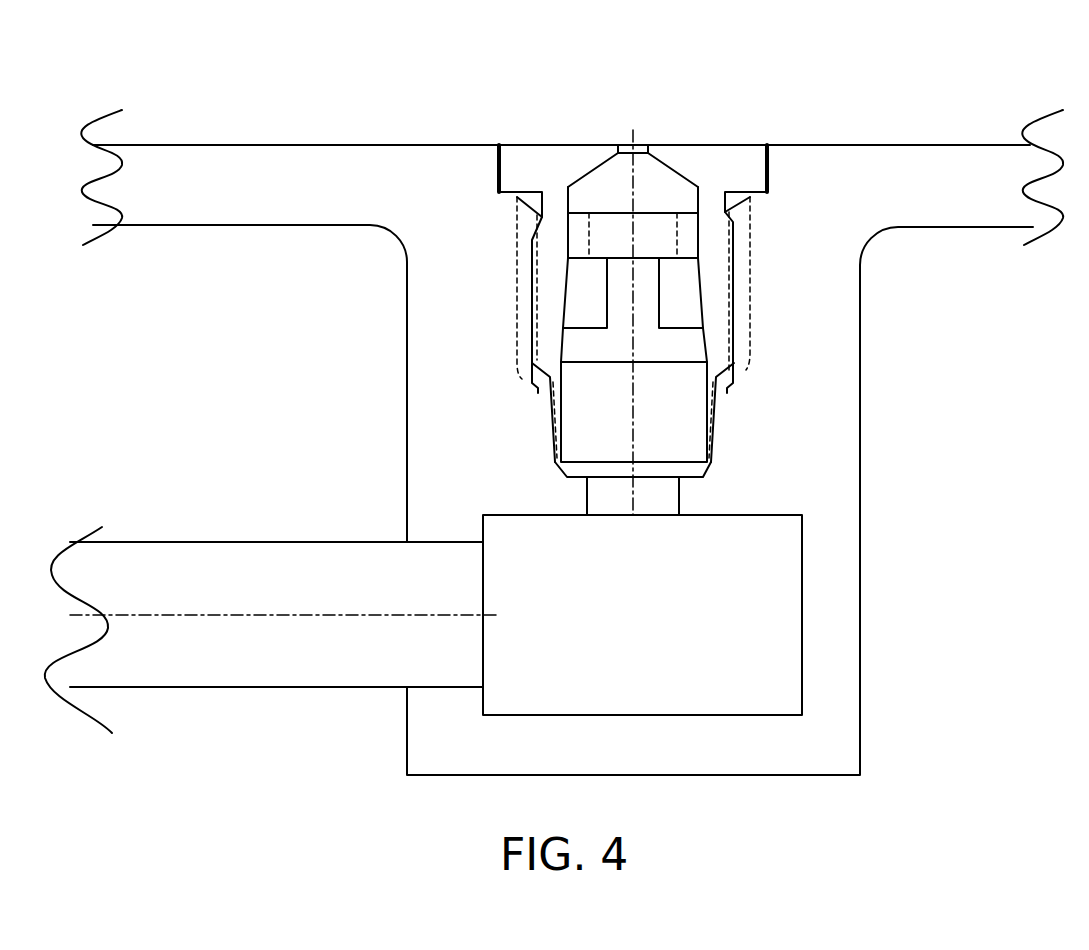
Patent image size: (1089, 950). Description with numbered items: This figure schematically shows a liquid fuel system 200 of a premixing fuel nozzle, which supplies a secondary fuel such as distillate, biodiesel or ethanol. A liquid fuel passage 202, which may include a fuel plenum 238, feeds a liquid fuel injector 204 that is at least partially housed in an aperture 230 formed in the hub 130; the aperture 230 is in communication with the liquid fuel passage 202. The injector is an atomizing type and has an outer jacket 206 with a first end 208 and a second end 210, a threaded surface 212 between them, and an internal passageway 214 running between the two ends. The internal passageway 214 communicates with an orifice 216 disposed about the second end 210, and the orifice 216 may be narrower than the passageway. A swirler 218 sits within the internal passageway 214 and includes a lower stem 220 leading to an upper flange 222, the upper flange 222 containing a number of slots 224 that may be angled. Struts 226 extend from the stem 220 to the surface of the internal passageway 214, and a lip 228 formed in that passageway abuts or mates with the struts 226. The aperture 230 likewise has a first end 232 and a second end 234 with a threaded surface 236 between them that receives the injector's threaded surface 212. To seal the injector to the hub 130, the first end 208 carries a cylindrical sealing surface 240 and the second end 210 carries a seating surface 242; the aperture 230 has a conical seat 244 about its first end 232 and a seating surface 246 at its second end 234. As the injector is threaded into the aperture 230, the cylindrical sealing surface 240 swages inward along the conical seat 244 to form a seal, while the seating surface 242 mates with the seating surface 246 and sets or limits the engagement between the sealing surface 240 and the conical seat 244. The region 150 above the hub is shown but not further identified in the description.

The hub 130 is at (889, 152).
The interior region 150 is at (545, 50).
The liquid fuel system 200 is at (858, 86).
The liquid fuel passage 202 is at (285, 614).
The liquid fuel injector 204 is at (670, 123).
The outer jacket 206 is at (682, 156).
The first end 208 is at (712, 403).
The second end 210 is at (533, 150).
The threaded surface 212 is at (735, 271).
The internal passageway 214 is at (634, 412).
The orifice 216 is at (623, 143).
The swirler 218 is at (615, 283).
The lower stem 220 is at (648, 318).
The upper flange 222 is at (598, 237).
The slots 224 is at (688, 238).
The struts 226 is at (570, 352).
The lip 228 is at (567, 328).
The aperture 230 is at (570, 473).
The first end 232 is at (712, 467).
The second end 234 is at (757, 137).
The threaded surface 236 is at (745, 295).
The fuel plenum 238 is at (642, 615).
The cylindrical sealing surface 240 is at (548, 398).
The seating surface 242 is at (528, 193).
The conical seat 244 is at (553, 437).
The seating surface 246 is at (500, 197).